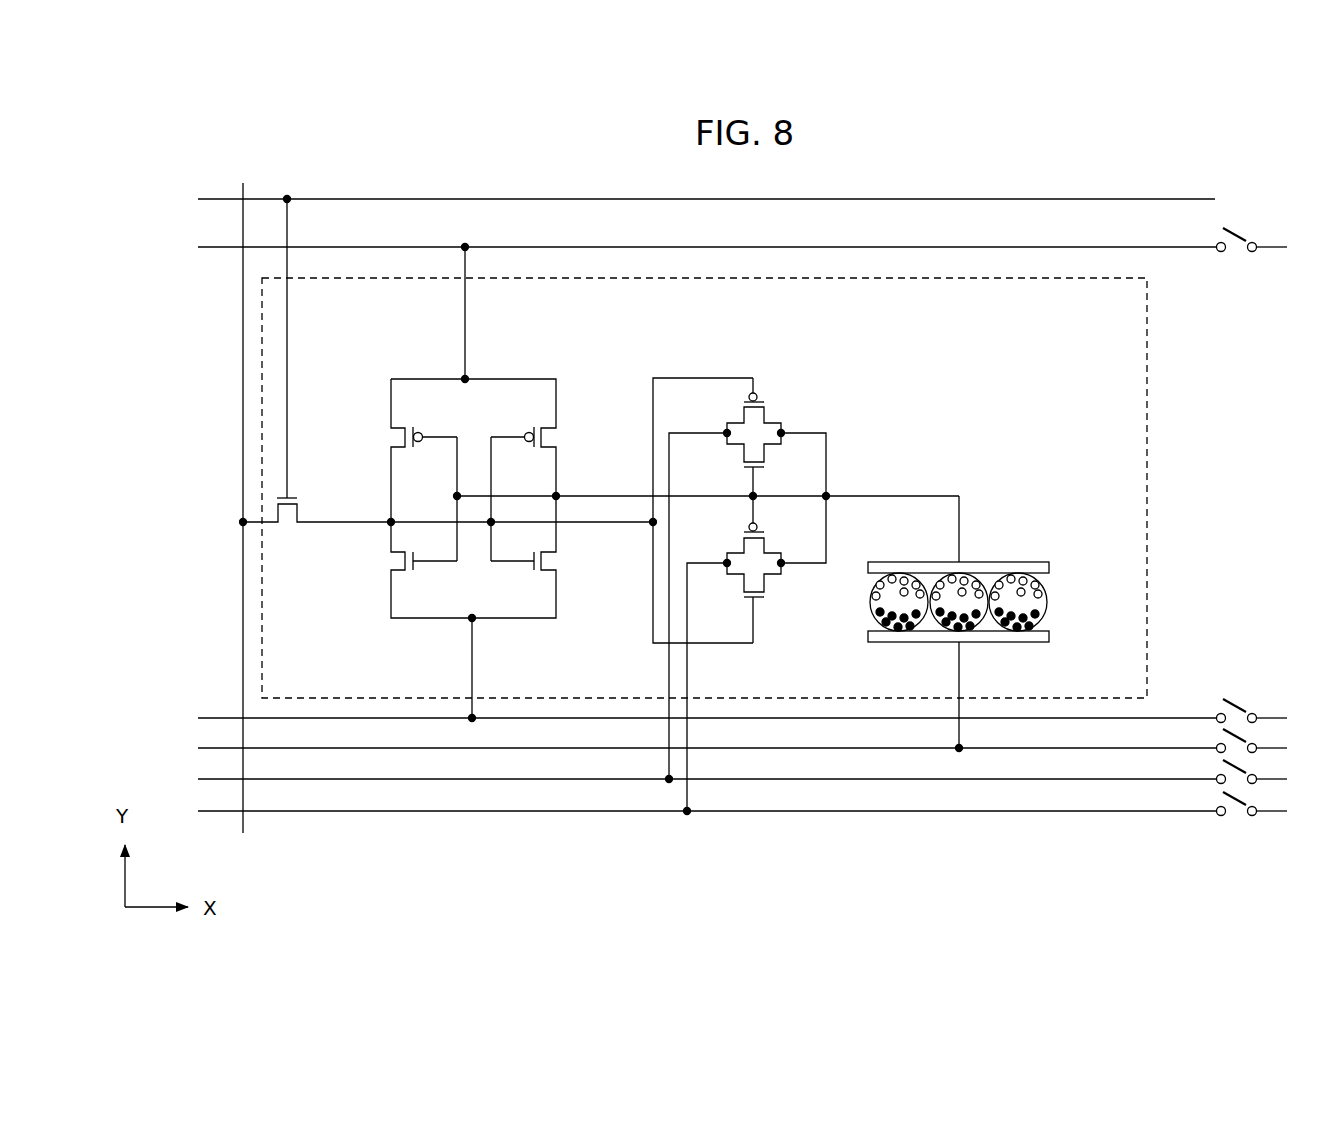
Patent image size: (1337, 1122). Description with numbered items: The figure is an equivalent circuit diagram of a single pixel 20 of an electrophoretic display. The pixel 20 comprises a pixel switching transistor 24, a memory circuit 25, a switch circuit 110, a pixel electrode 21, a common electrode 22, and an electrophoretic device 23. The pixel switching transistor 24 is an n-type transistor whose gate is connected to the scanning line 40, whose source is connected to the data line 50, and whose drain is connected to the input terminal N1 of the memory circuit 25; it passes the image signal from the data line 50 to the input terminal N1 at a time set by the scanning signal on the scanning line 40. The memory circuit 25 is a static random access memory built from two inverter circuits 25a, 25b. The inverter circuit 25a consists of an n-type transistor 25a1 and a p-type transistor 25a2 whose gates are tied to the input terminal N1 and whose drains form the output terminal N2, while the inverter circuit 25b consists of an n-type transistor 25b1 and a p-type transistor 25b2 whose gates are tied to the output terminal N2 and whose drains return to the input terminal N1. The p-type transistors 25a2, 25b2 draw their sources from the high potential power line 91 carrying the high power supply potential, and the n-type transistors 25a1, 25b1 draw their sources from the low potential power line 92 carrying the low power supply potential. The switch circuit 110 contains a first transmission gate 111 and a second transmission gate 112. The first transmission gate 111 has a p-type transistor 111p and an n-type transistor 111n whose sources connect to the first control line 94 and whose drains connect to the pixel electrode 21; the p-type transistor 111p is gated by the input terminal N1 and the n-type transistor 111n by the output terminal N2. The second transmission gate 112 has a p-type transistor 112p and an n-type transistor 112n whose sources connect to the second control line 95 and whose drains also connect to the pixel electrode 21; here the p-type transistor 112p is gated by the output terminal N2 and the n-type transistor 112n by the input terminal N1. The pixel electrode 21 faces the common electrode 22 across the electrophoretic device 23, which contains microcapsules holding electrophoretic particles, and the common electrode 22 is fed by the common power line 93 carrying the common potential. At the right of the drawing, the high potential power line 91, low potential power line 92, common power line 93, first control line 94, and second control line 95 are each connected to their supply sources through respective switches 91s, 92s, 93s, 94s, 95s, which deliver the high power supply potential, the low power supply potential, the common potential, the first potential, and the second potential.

The pixel 20 is at (1147, 352).
The pixel electrode 21 is at (978, 562).
The common electrode 22 is at (988, 642).
The electrophoretic device 23 is at (1052, 595).
The pixel switching transistor 24 is at (288, 524).
The memory circuit 25 is at (471, 482).
The inverter circuit 25a is at (554, 485).
The inverter circuit 25b is at (388, 482).
The n-type transistor 25a1 is at (550, 565).
The p-type transistor 25a2 is at (556, 437).
The n-type transistor 25b1 is at (391, 562).
The p-type transistor 25b2 is at (391, 437).
The scanning line 40 is at (818, 199).
The data line 50 is at (243, 590).
The high potential power line 91 is at (840, 247).
The low potential power line 92 is at (224, 718).
The common power line 93 is at (224, 748).
The first control line 94 is at (224, 779).
The second control line 95 is at (224, 811).
The switch 91s is at (1222, 229).
The switch 92s is at (1222, 700).
The switch 93s is at (1222, 730).
The switch 94s is at (1222, 761).
The switch 95s is at (1222, 793).
The switch circuit 110 is at (802, 576).
The first transmission gate 111 is at (771, 560).
The second transmission gate 112 is at (770, 653).
The p-type transistor 111p is at (764, 410).
The n-type transistor 111n is at (765, 460).
The p-type transistor 112p is at (772, 553).
The n-type transistor 112n is at (766, 590).
The input terminal N1 is at (391, 522).
The output terminal N2 is at (556, 496).